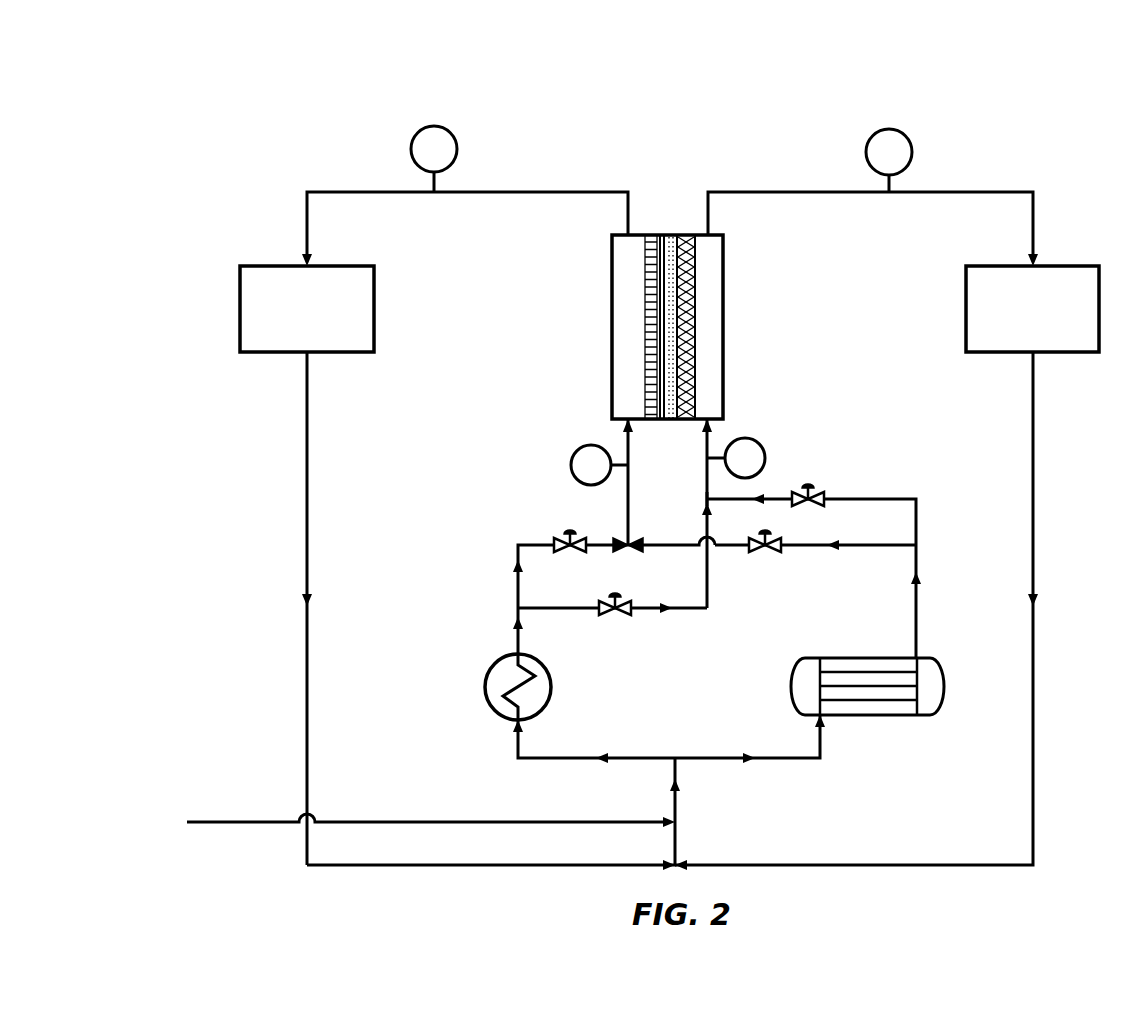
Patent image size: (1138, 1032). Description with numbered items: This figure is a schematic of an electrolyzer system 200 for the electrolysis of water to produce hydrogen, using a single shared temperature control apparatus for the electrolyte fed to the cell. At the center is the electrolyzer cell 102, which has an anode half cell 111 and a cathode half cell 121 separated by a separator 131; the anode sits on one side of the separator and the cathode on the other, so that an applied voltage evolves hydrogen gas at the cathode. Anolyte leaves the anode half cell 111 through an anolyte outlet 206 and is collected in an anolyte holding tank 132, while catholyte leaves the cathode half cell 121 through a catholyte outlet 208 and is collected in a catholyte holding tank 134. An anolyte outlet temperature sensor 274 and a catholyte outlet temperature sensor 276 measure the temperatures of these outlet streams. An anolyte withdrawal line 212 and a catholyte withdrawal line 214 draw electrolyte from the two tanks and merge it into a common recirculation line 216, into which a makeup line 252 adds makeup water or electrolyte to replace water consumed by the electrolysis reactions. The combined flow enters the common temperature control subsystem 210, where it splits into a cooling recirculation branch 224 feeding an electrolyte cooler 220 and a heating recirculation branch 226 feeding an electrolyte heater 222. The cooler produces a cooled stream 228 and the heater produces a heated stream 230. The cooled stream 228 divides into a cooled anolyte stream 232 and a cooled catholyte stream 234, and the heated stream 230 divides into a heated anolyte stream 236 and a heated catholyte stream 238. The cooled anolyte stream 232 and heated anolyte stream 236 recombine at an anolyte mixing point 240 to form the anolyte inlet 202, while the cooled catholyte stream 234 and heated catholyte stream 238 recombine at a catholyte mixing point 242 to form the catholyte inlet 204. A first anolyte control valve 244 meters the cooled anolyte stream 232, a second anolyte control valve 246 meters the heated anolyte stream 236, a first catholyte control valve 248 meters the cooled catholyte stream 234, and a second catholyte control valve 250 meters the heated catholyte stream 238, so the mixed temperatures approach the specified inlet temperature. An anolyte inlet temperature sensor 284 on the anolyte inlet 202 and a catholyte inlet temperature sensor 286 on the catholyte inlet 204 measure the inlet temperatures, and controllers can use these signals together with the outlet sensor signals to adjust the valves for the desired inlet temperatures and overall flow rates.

The system 200 is at (218, 72).
The electrolyzer cell 102 is at (669, 272).
The cathode half cell 121 is at (600, 297).
The anode half cell 111 is at (735, 297).
The separator 131 is at (670, 357).
The catholyte holding tank 134 is at (250, 270).
The anolyte holding tank 132 is at (1088, 272).
The catholyte outlet temperature sensor 276 is at (420, 133).
The anolyte outlet temperature sensor 274 is at (874, 135).
The catholyte inlet temperature sensor 286 is at (580, 448).
The anolyte inlet temperature sensor 284 is at (750, 440).
The catholyte outlet 208 is at (590, 192).
The anolyte outlet 206 is at (730, 192).
The catholyte withdrawal line 214 is at (305, 578).
The anolyte withdrawal line 212 is at (1035, 590).
The makeup line 252 is at (460, 820).
The common recirculation line 216 is at (677, 793).
The heating recirculation branch 226 is at (598, 757).
The cooling recirculation branch 224 is at (760, 757).
The electrolyte heater 222 is at (548, 686).
The electrolyte cooler 220 is at (815, 660).
The heated stream 230 is at (515, 630).
The heated catholyte stream 238 is at (516, 565).
The heated anolyte stream 236 is at (552, 610).
The second anolyte control valve 246 is at (620, 614).
The second catholyte control valve 250 is at (580, 551).
The catholyte mixing point 242 is at (636, 560).
The catholyte inlet 204 is at (628, 513).
The anolyte inlet 202 is at (707, 450).
The anolyte mixing point 240 is at (698, 499).
The first anolyte control valve 244 is at (820, 492).
The cooled anolyte stream 232 is at (912, 497).
The cooled catholyte stream 234 is at (858, 548).
The first catholyte control valve 248 is at (768, 553).
The cooled stream 228 is at (918, 603).
The temperature control subsystem 210 is at (415, 673).